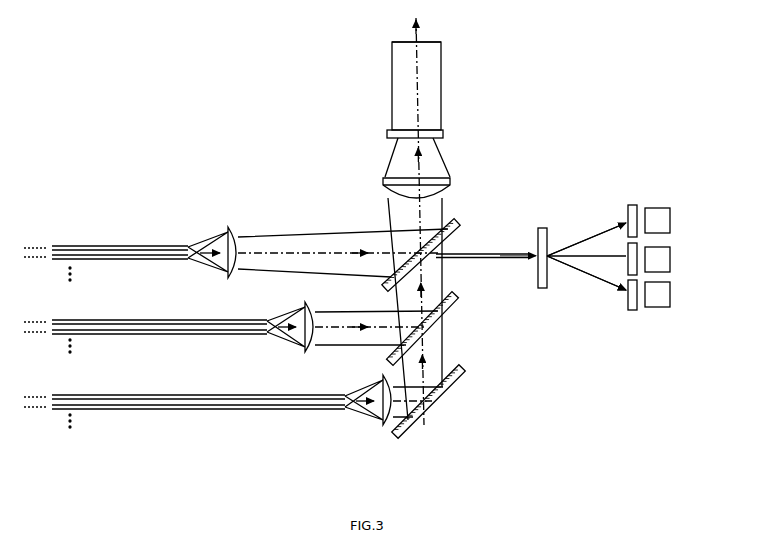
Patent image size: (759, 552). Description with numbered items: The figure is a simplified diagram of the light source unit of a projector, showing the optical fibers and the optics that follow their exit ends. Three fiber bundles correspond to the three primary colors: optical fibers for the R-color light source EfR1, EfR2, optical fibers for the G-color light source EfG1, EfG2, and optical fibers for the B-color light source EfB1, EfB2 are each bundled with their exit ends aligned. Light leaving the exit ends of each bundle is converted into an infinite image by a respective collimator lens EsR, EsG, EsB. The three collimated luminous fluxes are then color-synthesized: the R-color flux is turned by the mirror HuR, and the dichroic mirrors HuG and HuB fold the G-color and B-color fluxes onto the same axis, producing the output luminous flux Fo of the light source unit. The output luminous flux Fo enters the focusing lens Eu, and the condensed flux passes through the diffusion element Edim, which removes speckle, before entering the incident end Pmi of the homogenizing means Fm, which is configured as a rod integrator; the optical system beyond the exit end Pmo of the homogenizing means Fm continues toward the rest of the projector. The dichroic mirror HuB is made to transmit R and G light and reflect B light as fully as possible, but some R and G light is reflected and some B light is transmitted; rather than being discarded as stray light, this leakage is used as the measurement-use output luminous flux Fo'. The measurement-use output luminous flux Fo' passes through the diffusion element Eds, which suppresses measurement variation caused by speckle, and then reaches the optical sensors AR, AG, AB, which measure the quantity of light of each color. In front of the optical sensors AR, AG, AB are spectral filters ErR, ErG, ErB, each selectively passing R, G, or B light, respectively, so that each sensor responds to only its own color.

The exit end of the homogenizing means Pmo is at (441, 42).
The homogenizing means Fm is at (441, 78).
The diffusion element Edim is at (387, 134).
The incident end of the homogenizing means Pmi is at (443, 139).
The focusing lens Eu is at (383, 181).
The output luminous flux Fo is at (387, 309).
The dichroic mirror HuB is at (457, 231).
The dichroic mirror HuG is at (455, 302).
The mirror HuR is at (462, 375).
The measurement-use output luminous flux Fo' is at (486, 270).
The diffusion element Eds is at (541, 228).
The spectral filter ErB is at (633, 205).
The spectral filter ErG is at (637, 243).
The spectral filter ErR is at (635, 310).
The optical sensor AB is at (670, 218).
The optical sensor AG is at (670, 260).
The optical sensor AR is at (670, 295).
The optical fiber for B-color light source EfB1 is at (150, 246).
The optical fiber for B-color light source EfB2 is at (150, 259).
The optical fiber for G-color light source EfG1 is at (150, 320).
The optical fiber for G-color light source EfG2 is at (150, 334).
The optical fiber for R-color light source EfR1 is at (150, 395).
The optical fiber for R-color light source EfR2 is at (150, 409).
The collimator lens EsB is at (228, 278).
The collimator lens EsG is at (305, 352).
The collimator lens EsR is at (383, 425).